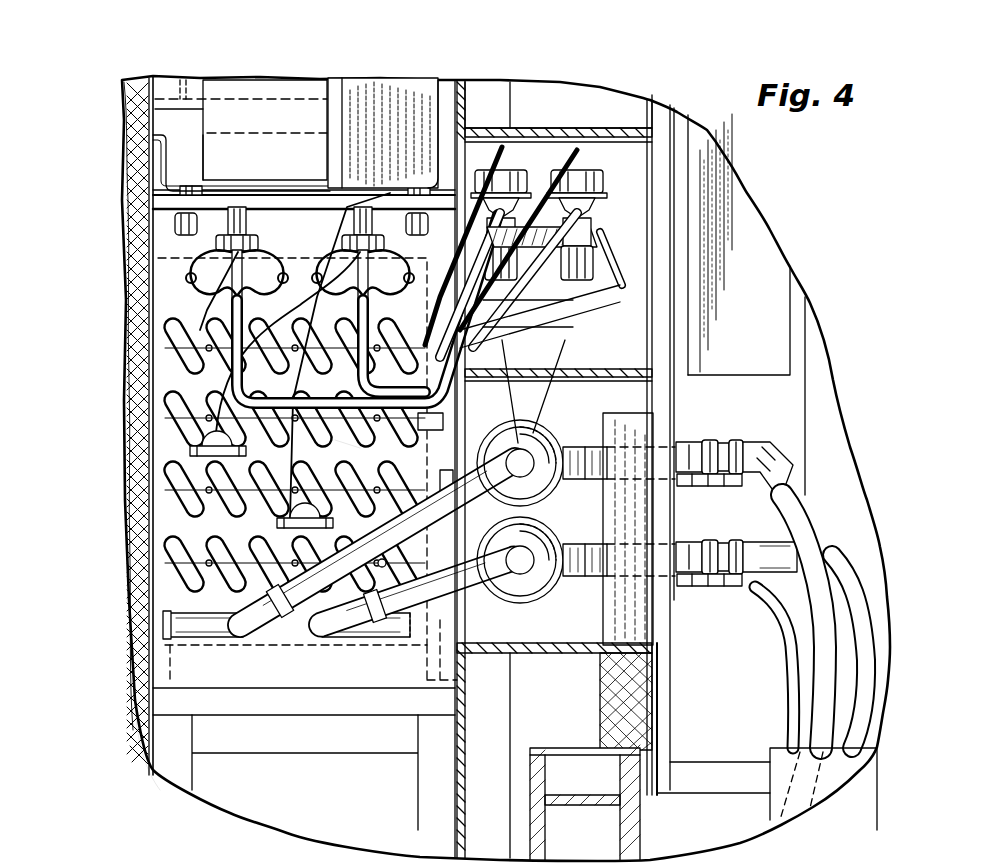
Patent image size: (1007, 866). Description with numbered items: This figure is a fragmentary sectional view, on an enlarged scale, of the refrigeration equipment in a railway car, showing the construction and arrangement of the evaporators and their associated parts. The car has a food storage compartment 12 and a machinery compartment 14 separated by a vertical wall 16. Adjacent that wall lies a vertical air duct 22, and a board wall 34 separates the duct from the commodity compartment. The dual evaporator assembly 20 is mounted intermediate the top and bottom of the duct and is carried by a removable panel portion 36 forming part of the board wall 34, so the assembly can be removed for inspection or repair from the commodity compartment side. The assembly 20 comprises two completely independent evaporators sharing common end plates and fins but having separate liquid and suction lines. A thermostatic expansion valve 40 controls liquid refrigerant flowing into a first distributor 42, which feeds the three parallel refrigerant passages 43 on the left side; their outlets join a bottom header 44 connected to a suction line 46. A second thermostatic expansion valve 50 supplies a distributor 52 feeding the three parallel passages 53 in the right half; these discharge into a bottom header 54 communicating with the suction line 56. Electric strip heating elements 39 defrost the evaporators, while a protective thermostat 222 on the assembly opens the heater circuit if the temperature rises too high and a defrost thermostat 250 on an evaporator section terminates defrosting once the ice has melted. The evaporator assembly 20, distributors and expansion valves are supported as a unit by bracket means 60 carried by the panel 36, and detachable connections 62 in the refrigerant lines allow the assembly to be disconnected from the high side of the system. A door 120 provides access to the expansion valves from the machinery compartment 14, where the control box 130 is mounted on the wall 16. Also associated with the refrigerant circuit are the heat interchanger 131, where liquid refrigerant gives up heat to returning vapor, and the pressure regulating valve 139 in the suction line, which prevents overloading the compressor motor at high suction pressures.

The food storage compartment 12 is at (140, 69).
The machinery compartment 14 is at (847, 512).
The vertical wall 16 is at (718, 834).
The dual evaporator assembly 20 is at (410, 297).
The vertical air duct 22 is at (247, 800).
The board wall 34 is at (153, 773).
The removable panel portion 36 is at (143, 92).
The electric strip heating elements 39 is at (210, 400).
The thermostatic expansion valve 40 is at (600, 190).
The first distributor 42 is at (253, 243).
The parallel refrigerant passages 43 is at (277, 521).
The bottom header 44 is at (205, 627).
The suction line 46 is at (437, 513).
The second thermostatic expansion valve 50 is at (522, 180).
The distributor 52 is at (358, 208).
The parallel passages 53 is at (335, 440).
The bottom header 54 is at (353, 630).
The suction line 56 is at (537, 597).
The bracket means 60 is at (457, 183).
The detachable connections 62 is at (748, 440).
The door 120 is at (680, 343).
The control box 130 is at (797, 343).
The heat interchanger 131 is at (550, 445).
The pressure regulating valve 139 is at (506, 471).
The protective thermostat 222 is at (404, 566).
The defrost thermostat 250 is at (247, 451).